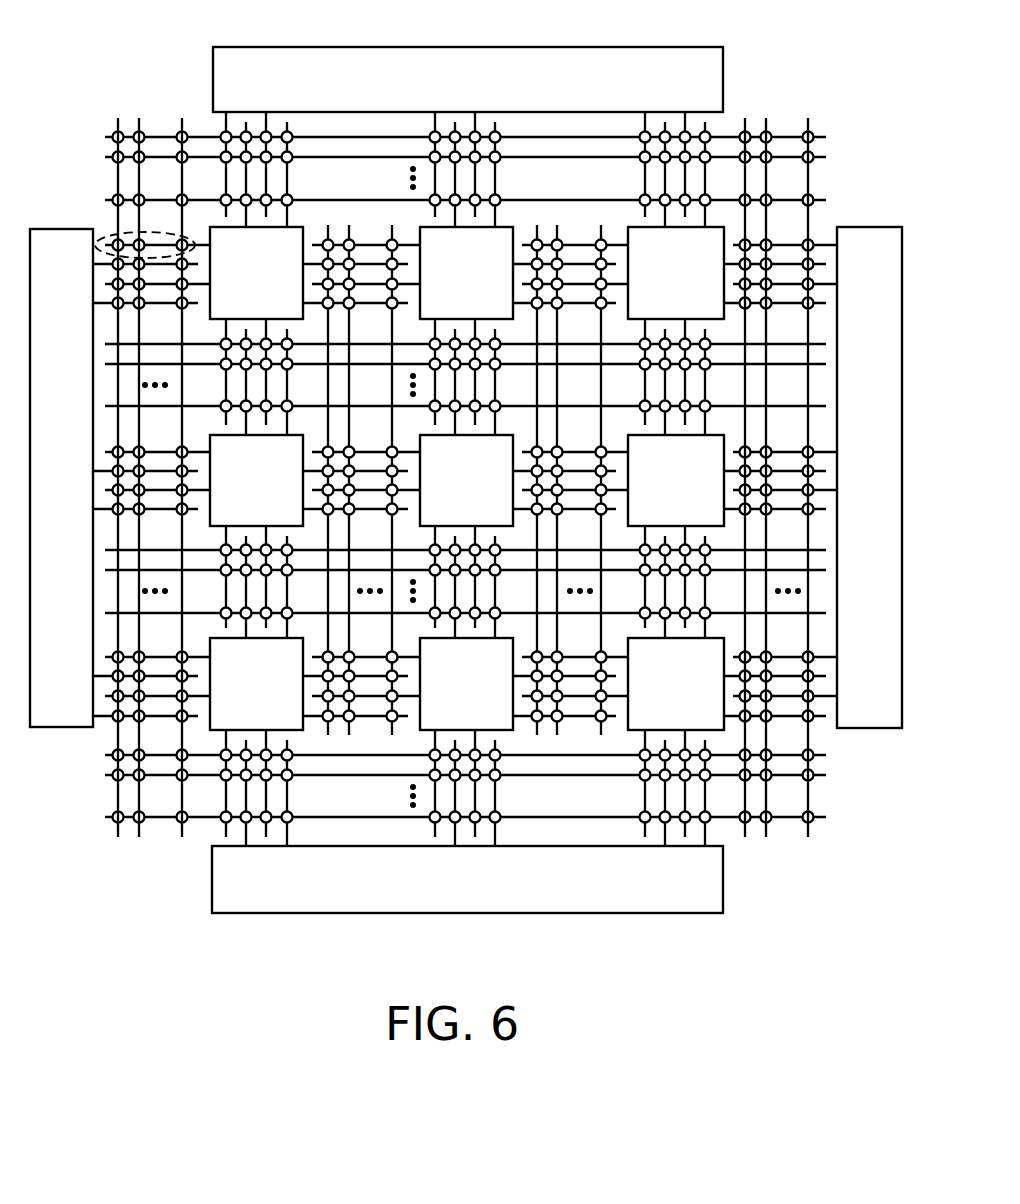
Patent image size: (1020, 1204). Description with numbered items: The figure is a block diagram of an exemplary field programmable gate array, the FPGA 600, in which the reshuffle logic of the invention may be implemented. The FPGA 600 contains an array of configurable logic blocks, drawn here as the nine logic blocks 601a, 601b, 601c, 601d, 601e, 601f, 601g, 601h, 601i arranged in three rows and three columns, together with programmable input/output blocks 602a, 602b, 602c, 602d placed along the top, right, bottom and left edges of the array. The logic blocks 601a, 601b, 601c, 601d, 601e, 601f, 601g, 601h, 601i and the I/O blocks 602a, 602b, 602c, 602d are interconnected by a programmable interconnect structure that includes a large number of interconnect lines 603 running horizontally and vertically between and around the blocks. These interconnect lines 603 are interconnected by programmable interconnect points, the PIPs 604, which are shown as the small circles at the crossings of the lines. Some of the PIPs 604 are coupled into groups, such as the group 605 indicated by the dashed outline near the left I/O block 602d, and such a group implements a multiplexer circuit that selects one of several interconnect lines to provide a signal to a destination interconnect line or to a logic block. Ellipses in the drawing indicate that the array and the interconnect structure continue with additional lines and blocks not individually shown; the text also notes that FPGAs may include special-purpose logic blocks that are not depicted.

The FPGA 600 is at (466, 514).
The configurable logic block 601a is at (232, 304).
The configurable logic block 601b is at (442, 304).
The configurable logic block 601c is at (652, 304).
The configurable logic block 601d is at (232, 511).
The configurable logic block 601e is at (442, 511).
The configurable logic block 601f is at (652, 511).
The configurable logic block 601g is at (232, 715).
The configurable logic block 601h is at (442, 715).
The configurable logic block 601i is at (652, 715).
The programmable input/output block 602a is at (444, 107).
The programmable input/output block 602b is at (862, 534).
The programmable input/output block 602c is at (444, 904).
The programmable input/output block 602d is at (54, 534).
The interconnect lines 603 is at (198, 133).
The programmable interconnect points 604 is at (745, 128).
The group of programmable interconnect points 605 is at (132, 212).